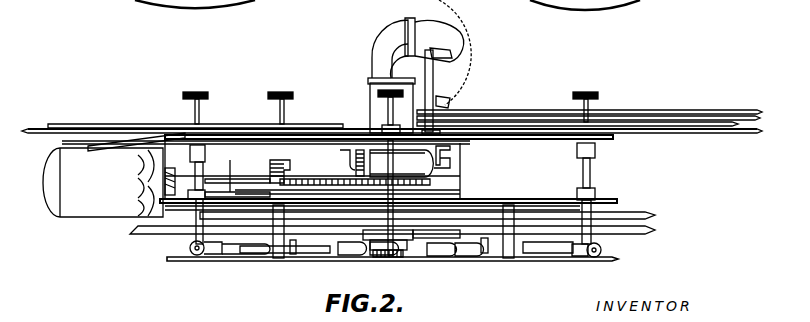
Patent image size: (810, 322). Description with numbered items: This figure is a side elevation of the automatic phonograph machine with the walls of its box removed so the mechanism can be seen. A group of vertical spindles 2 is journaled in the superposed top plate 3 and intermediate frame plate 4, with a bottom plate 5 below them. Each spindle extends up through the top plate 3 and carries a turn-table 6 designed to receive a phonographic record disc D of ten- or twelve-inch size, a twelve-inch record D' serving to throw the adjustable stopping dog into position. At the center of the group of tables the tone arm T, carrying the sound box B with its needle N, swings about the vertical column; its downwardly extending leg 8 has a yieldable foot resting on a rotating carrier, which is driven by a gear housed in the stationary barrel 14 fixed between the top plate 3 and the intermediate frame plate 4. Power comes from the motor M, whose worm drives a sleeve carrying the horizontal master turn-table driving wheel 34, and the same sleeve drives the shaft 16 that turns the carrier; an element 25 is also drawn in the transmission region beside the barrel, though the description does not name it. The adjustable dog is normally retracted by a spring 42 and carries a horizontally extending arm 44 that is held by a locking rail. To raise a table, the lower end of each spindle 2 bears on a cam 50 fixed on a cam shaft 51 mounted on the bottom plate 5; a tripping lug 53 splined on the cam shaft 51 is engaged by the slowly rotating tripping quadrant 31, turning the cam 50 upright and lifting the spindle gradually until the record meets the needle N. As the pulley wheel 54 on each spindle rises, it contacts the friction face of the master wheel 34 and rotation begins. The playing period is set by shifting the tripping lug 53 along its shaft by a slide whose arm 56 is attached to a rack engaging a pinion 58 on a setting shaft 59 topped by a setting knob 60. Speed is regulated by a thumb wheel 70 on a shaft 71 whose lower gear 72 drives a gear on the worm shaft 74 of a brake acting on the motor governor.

The turn-table 6 is at (35, 129).
The phonographic record disc D is at (393, 109).
The twelve-inch record D' is at (589, 104).
The top plate 3 is at (612, 137).
The setting knob 60 is at (193, 92).
The setting shaft 59 is at (195, 108).
The thumb wheel 70 is at (278, 92).
The shaft 71 is at (285, 115).
The tone arm T is at (461, 46).
The sound box B is at (452, 53).
The leg 8 is at (433, 76).
The needle N is at (450, 105).
The barrel 14 is at (450, 176).
The shaft 16 is at (400, 181).
The ribbed shaft 25 is at (360, 170).
The gear 72 is at (285, 166).
The spring 42 is at (455, 147).
The horizontally extending arm 44 is at (450, 163).
The worm shaft 74 is at (232, 169).
The motor M is at (72, 205).
The vertical spindle 2 is at (193, 178).
The intermediate frame plate 4 is at (616, 201).
The master turn-table driving wheel 34 is at (540, 206).
The pulley wheel 54 is at (155, 232).
The cam 50 is at (190, 248).
The cam shaft 51 is at (263, 253).
The tripping lug 53 is at (296, 246).
The arm 56 is at (300, 254).
The pinion 58 is at (392, 256).
The tripping quadrant 31 is at (452, 234).
The bottom plate 5 is at (614, 261).